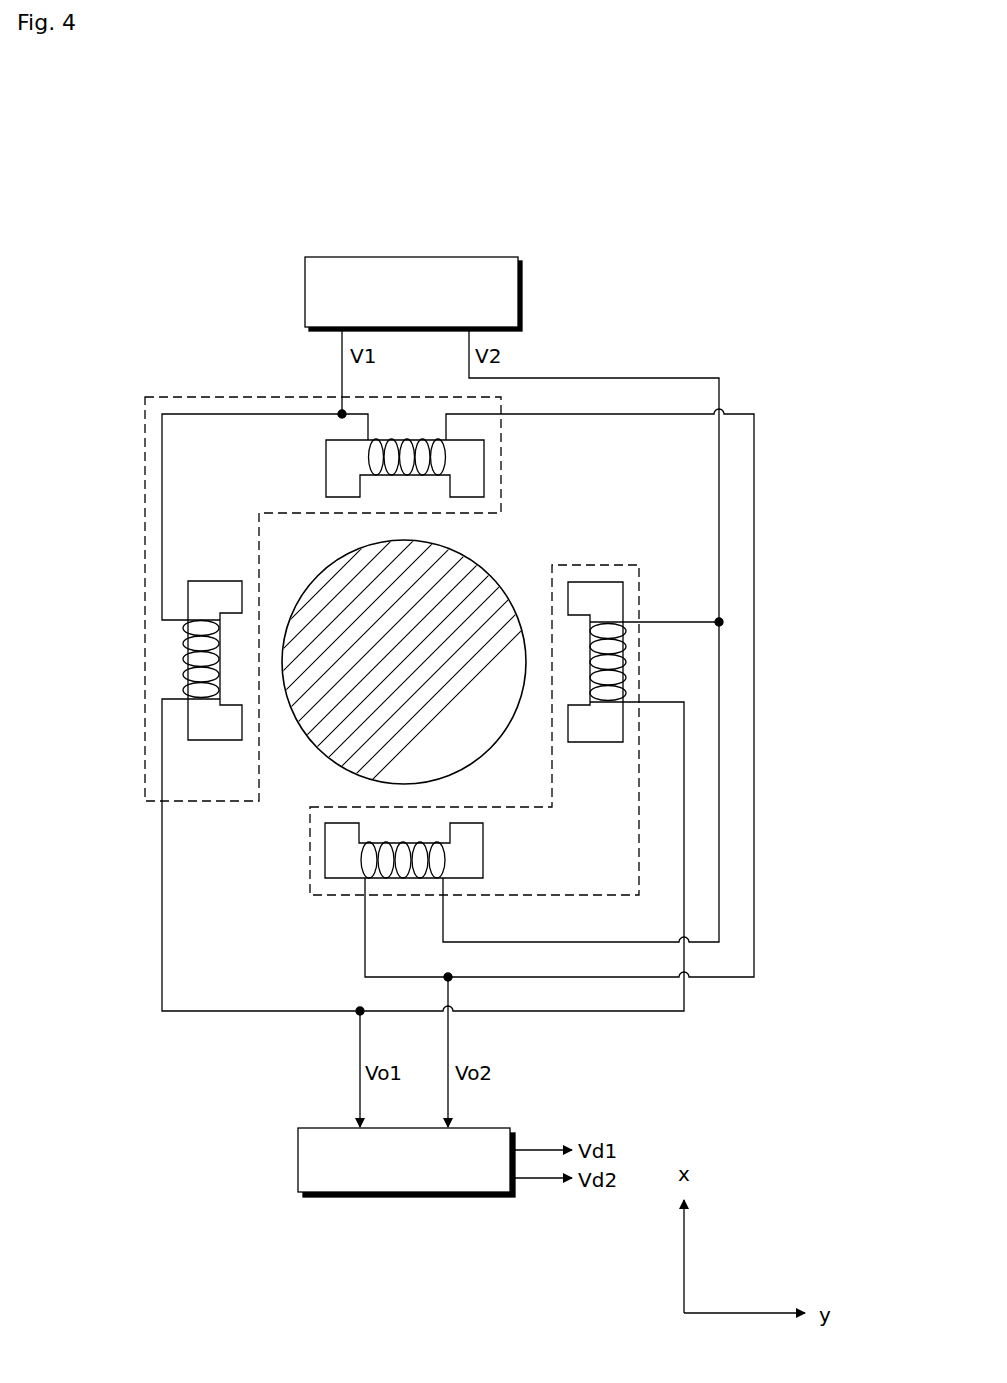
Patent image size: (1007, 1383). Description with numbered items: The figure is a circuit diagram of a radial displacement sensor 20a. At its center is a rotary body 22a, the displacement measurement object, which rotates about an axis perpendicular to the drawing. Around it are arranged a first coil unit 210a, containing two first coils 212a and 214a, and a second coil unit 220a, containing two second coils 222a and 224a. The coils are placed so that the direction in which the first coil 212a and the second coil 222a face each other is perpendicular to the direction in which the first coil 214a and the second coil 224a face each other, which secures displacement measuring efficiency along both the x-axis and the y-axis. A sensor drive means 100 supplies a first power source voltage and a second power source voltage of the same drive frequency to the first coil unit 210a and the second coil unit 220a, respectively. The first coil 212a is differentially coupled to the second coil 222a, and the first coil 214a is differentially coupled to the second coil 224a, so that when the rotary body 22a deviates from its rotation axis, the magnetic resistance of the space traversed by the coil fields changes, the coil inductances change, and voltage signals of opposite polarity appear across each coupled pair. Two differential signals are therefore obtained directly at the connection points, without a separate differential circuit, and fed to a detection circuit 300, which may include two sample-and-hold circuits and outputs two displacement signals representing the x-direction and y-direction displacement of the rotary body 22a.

The sensor drive means 100 is at (407, 257).
The detection circuit 300 is at (402, 1192).
The radial displacement sensor 20a is at (435, 89).
The first coil unit 210a is at (145, 432).
The second coil unit 220a is at (310, 895).
The first coil 212a is at (218, 581).
The first coil 214a is at (326, 466).
The second coil 222a is at (593, 742).
The second coil 224a is at (483, 852).
The rotary body 22a is at (487, 572).